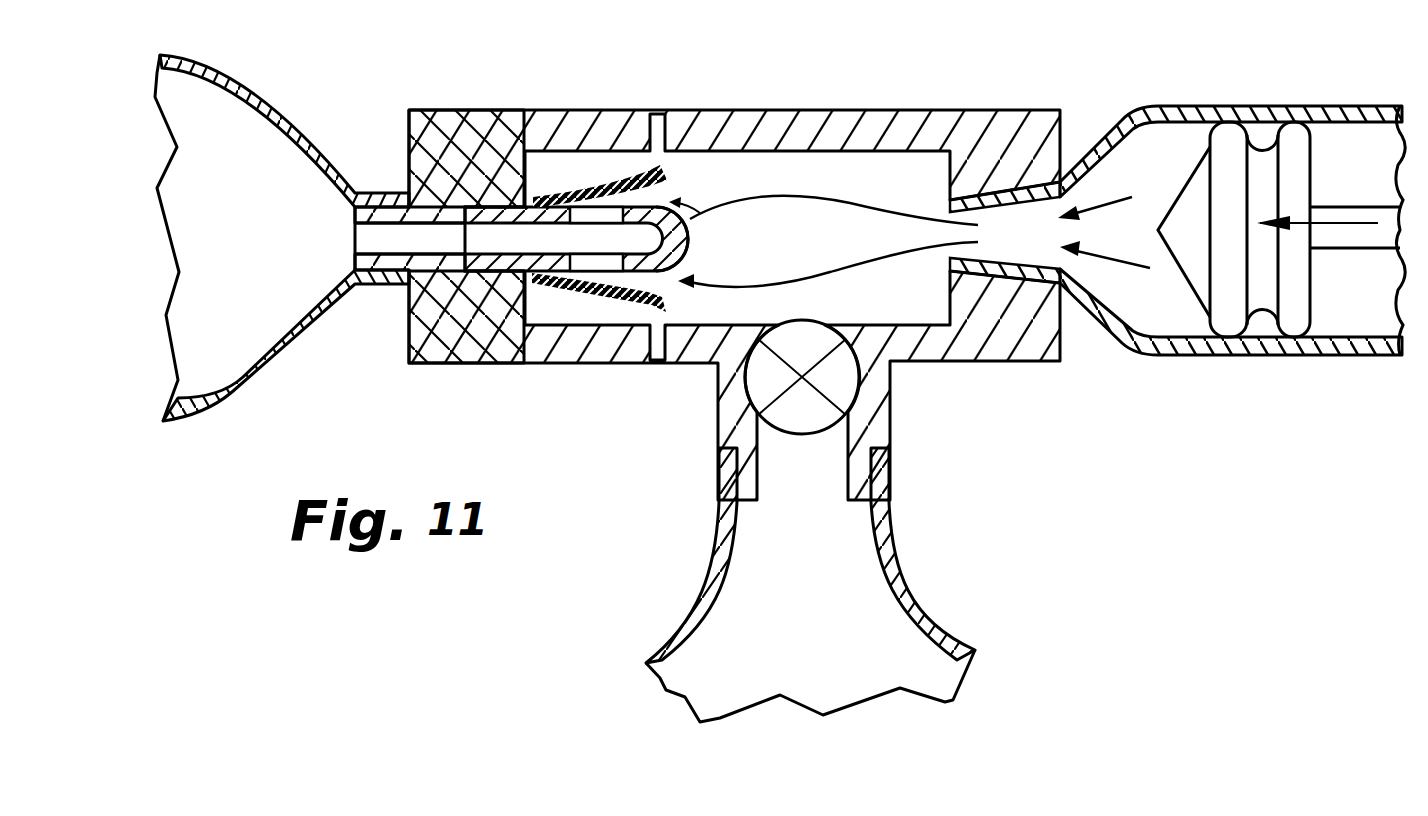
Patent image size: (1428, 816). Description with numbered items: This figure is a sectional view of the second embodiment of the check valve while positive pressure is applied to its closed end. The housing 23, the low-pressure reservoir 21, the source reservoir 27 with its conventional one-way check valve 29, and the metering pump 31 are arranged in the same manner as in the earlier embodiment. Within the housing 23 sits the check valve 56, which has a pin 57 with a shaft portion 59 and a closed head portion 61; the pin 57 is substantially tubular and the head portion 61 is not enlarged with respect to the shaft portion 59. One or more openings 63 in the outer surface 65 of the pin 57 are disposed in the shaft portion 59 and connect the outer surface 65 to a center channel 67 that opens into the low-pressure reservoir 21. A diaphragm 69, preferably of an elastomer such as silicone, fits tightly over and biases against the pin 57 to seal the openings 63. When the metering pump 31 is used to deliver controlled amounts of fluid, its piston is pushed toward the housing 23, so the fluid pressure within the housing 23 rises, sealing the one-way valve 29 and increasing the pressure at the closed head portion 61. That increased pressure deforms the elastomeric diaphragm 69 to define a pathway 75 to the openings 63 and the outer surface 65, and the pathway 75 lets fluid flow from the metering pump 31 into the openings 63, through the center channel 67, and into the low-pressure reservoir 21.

The low-pressure reservoir 21 is at (220, 266).
The housing 23 is at (853, 111).
The source reservoir 27 is at (770, 625).
The one-way check valve 29 is at (852, 392).
The metering pump 31 is at (1128, 120).
The check valve 56 is at (762, 165).
The pin 57 is at (515, 192).
The shaft portion 59 is at (550, 290).
The closed head portion 61 is at (700, 213).
The openings 63 is at (598, 266).
The outer surface 65 is at (517, 206).
The center channel 67 is at (505, 240).
The diaphragm 69 is at (668, 182).
The pathway 75 is at (633, 276).